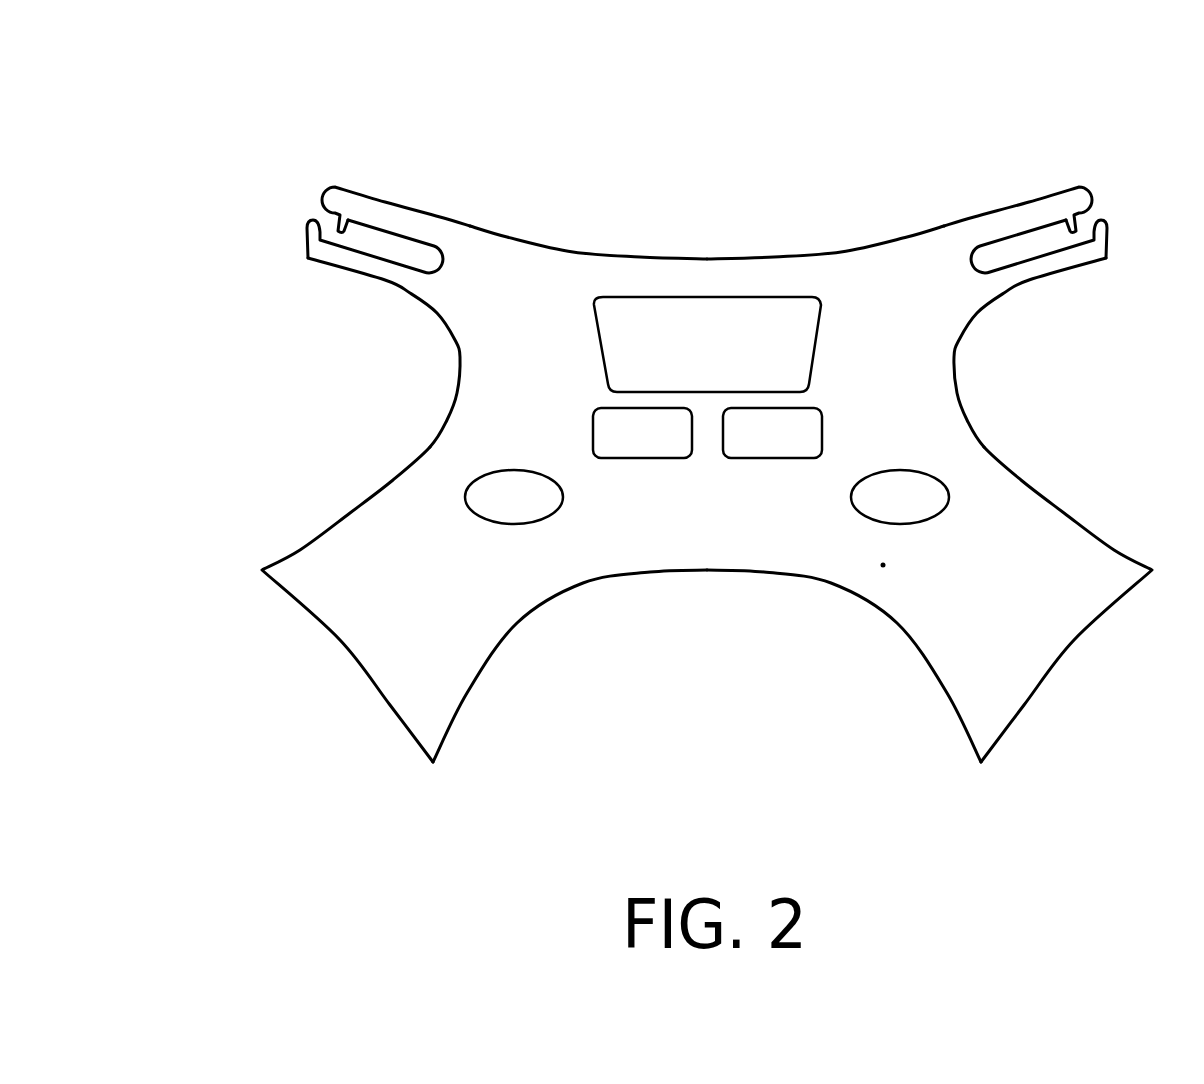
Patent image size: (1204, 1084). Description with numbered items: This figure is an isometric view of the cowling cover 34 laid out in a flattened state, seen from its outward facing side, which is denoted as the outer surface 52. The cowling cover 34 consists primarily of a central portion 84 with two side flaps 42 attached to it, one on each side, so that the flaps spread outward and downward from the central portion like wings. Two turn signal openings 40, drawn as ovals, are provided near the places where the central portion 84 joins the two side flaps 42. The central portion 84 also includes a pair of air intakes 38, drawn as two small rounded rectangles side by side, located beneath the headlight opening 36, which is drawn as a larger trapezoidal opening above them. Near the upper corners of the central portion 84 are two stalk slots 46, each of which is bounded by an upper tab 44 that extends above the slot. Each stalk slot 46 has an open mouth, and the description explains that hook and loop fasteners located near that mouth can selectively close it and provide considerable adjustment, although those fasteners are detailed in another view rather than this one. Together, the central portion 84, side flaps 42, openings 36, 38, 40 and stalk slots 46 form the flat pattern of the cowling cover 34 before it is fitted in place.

The cowling cover 34 is at (338, 744).
The headlight opening 36 is at (643, 333).
The air intakes 38 is at (807, 437).
The turn signal openings 40 is at (505, 495).
The side flaps 42 is at (387, 620).
The upper tab 44 is at (338, 198).
The stalk slots 46 is at (398, 250).
The outer surface 52 is at (883, 565).
The central portion 84 is at (612, 555).